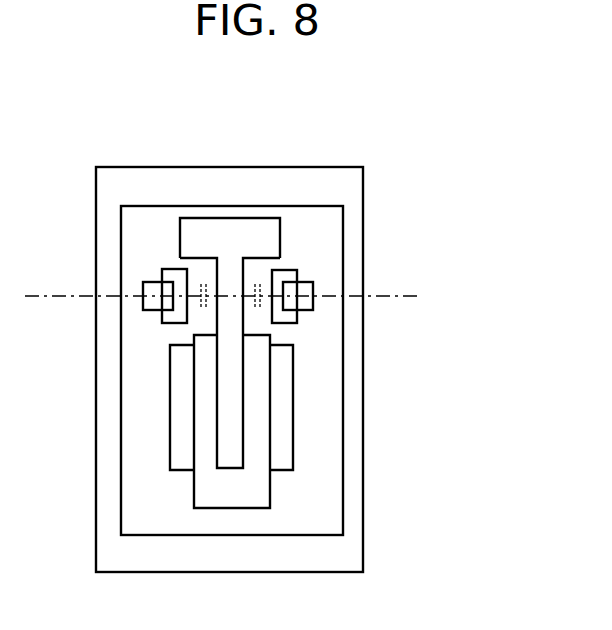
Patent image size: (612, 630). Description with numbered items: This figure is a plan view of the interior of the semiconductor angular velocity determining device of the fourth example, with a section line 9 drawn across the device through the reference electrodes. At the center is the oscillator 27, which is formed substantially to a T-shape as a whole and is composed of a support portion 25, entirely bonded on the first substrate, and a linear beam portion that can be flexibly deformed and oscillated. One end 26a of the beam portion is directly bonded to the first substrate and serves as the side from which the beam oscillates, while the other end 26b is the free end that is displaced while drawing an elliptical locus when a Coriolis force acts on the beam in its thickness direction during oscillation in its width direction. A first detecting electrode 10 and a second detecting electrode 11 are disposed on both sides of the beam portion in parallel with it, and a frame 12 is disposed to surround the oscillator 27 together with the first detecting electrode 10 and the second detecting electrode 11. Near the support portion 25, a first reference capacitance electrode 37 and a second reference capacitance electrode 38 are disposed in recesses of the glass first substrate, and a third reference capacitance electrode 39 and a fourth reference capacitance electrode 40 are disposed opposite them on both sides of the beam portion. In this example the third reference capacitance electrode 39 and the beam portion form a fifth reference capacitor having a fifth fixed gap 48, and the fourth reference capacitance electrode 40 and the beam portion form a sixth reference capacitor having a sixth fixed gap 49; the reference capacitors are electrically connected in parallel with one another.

The section line 9- 9 is at (40, 307).
The first detecting electrode 10 is at (180, 461).
The second detecting electrode 11 is at (285, 452).
The frame 12 is at (107, 447).
The support portion 25 is at (252, 226).
The one end of beam portion 26a is at (238, 275).
The other end of beam portion 26b is at (233, 398).
The oscillator 27 is at (245, 359).
The first reference capacitance electrode 37 is at (290, 276).
The second reference capacitance electrode 38 is at (175, 270).
The third reference capacitance electrode 39 is at (302, 294).
The fourth reference capacitance electrode 40 is at (143, 288).
The fifth fixed gap 48 is at (262, 303).
The sixth fixed gap 49 is at (205, 290).